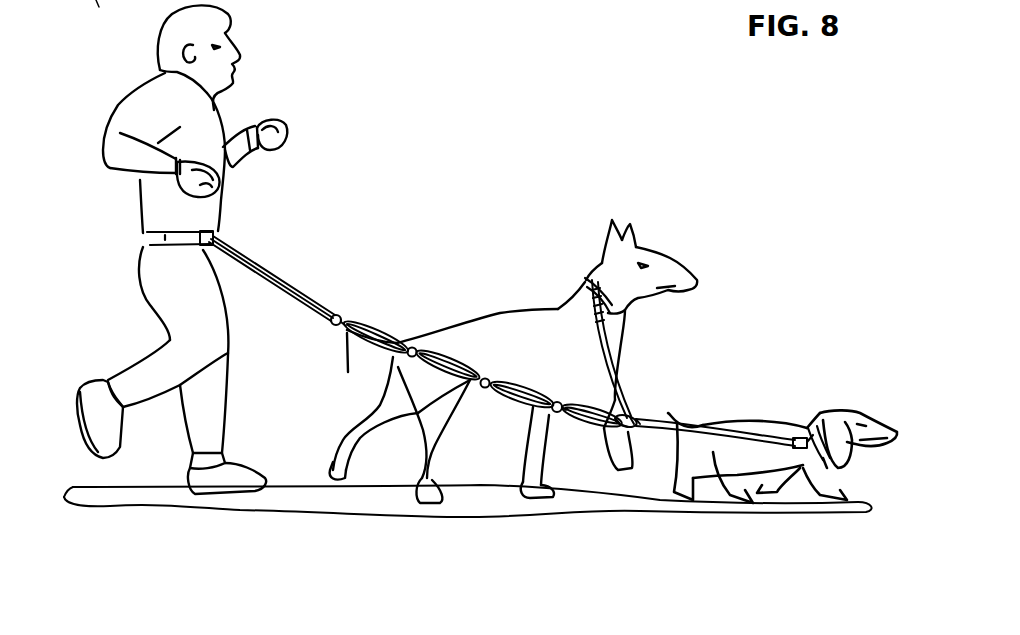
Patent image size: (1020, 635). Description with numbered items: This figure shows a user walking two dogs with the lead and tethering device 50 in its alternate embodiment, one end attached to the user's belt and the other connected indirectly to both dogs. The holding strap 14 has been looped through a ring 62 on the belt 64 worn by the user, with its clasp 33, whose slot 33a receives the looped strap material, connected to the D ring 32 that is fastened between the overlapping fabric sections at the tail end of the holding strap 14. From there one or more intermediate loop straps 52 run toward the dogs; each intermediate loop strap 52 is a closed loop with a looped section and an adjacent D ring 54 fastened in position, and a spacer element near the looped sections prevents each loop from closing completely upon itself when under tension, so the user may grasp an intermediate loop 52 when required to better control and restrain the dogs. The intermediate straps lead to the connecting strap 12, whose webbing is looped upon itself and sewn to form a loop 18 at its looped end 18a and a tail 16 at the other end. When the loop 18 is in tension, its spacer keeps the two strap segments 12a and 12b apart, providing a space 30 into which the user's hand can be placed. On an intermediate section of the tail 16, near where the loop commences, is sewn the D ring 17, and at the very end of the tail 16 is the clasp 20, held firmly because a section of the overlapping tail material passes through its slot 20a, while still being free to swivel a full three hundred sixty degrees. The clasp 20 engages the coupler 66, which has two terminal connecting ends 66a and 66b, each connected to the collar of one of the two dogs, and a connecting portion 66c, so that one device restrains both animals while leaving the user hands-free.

The connecting strap 12 is at (591, 396).
The strap segment 12a is at (576, 395).
The strap segment 12b is at (567, 395).
The holding strap 14 is at (270, 297).
The tail 16 is at (655, 414).
The D ring 17 is at (636, 416).
The loop 18 is at (604, 426).
The looped end 18a is at (588, 430).
The clasp 20 is at (635, 428).
The slot 20a is at (636, 432).
The space 30 is at (517, 407).
The D ring 32 is at (343, 316).
The clasp 33 is at (369, 304).
The slot 33a is at (336, 315).
The lead and tethering device 50 is at (474, 266).
The intermediate loop strap 52 is at (400, 373).
The D ring 54 is at (416, 350).
The ring 62 is at (183, 253).
The belt 64 is at (167, 231).
The coupler 66 is at (609, 357).
The terminal connecting end 66a is at (588, 272).
The terminal connecting end 66b is at (812, 427).
The collar snap 66c is at (696, 441).